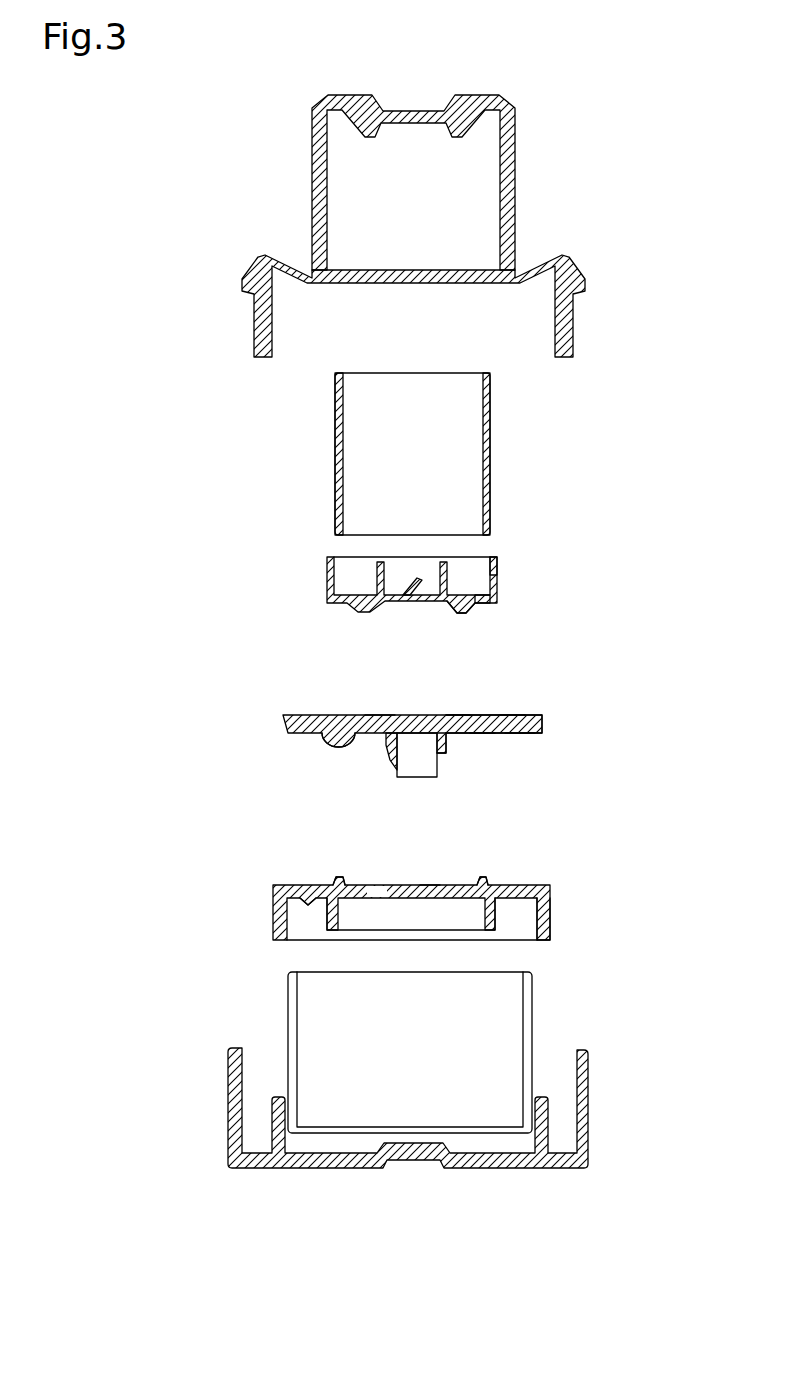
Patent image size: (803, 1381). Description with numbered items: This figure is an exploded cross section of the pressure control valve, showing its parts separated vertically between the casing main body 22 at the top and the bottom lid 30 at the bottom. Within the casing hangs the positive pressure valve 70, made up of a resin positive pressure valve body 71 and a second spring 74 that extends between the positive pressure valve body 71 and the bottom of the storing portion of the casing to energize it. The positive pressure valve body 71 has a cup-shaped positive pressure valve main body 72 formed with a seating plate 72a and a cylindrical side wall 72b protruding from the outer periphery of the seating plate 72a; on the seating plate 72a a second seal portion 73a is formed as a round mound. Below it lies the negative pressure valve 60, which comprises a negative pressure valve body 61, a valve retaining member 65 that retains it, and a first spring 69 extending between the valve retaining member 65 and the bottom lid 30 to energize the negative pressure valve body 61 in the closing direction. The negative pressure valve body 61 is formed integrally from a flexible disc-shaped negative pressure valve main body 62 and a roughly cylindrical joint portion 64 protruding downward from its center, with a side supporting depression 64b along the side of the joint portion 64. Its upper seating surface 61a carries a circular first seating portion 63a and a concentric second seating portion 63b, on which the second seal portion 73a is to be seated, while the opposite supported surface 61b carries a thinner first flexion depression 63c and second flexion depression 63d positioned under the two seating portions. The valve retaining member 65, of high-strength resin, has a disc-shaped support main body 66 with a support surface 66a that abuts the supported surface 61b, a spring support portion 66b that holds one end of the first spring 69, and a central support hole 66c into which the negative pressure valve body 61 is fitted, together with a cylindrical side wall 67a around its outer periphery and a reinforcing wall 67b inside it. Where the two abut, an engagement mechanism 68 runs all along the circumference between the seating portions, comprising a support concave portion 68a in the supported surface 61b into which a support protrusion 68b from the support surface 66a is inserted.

The casing main body 22 is at (517, 155).
The bottom lid 30 is at (253, 1160).
The negative pressure valve 60 is at (373, 894).
The negative pressure valve body 61 is at (395, 738).
The seating surface 61a is at (380, 715).
The supported surface 61b is at (316, 715).
The negative pressure valve main body 62 is at (542, 720).
The first seating portion 63a is at (513, 715).
The second seating portion 63b is at (455, 714).
The first flexion depression 63c is at (520, 738).
The second flexion depression 63d is at (455, 737).
The joint portion 64 is at (377, 774).
The side supporting depression 64b is at (383, 740).
The valve retaining member 65 is at (392, 890).
The support main body 66 is at (445, 889).
The support surface 66a is at (350, 884).
The spring support portion 66b is at (297, 884).
The support hole 66c is at (430, 884).
The side wall 67a is at (547, 923).
The reinforcing wall 67b is at (495, 913).
The engagement mechanism 68 is at (538, 793).
The support concave portion 68a is at (483, 738).
The support protrusion 68b is at (482, 877).
The first spring 69 is at (285, 1015).
The positive pressure valve 70 is at (497, 506).
The positive pressure valve body 71 is at (602, 590).
The positive pressure valve main body 72 is at (467, 588).
The seating plate 72a is at (493, 606).
The side wall 72b is at (497, 570).
The second seal portion 73a is at (458, 613).
The second spring 74 is at (490, 455).